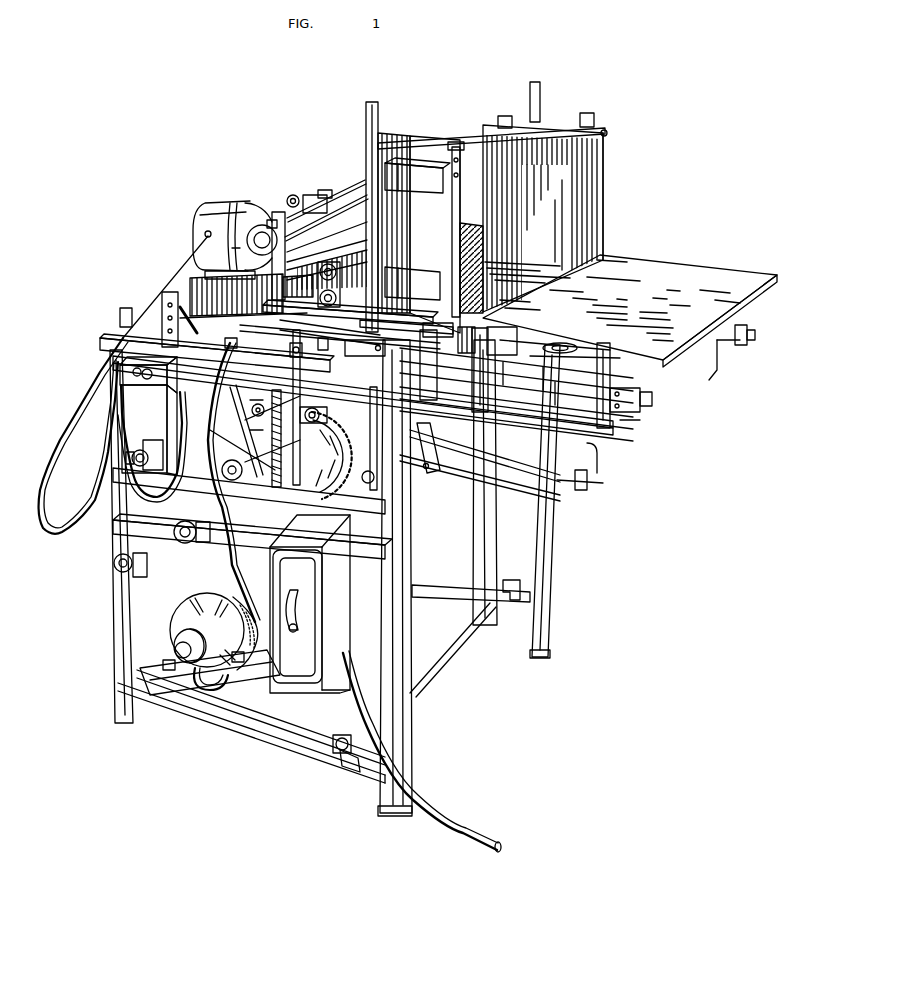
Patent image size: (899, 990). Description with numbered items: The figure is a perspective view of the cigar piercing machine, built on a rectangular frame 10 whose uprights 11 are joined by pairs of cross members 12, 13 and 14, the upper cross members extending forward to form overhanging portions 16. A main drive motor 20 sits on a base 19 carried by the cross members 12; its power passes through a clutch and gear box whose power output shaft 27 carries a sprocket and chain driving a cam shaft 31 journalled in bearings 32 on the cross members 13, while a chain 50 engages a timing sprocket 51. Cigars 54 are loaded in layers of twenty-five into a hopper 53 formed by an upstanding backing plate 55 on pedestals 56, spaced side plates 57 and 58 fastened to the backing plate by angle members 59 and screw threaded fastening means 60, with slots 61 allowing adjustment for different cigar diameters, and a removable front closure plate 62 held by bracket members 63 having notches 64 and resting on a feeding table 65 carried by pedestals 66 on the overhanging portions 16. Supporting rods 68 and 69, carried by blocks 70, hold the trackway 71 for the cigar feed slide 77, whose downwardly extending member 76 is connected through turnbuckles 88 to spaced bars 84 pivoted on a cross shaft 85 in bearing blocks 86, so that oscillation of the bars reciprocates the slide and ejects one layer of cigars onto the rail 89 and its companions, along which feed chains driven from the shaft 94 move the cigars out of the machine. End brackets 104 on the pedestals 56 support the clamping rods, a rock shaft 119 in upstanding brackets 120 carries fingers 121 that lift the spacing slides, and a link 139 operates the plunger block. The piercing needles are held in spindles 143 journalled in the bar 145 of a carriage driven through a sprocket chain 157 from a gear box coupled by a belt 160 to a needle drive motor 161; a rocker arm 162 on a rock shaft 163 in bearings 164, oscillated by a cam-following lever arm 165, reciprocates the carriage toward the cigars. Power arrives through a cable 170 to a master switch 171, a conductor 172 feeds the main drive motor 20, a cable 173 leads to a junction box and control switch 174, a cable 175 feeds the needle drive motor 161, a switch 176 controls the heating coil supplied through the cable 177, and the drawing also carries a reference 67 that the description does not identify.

The frame 10 is at (102, 335).
The uprights 11 is at (117, 713).
The cross members 12 is at (343, 763).
The cross members 13 is at (127, 527).
The cross members 14 is at (145, 475).
The overhanging portions 16 is at (610, 438).
The base 19 is at (182, 693).
The main drive motor 20 is at (172, 627).
The power output shaft 27 is at (177, 648).
The cam shaft 31 is at (180, 543).
The bearings 32 is at (200, 543).
The chain 50 is at (443, 467).
The timing sprocket 51 is at (332, 488).
The hopper 53 is at (607, 190).
The cigars 54 is at (480, 280).
The backing plate 55 is at (391, 145).
The pedestals 56 is at (460, 320).
The side plate 57 is at (444, 134).
The side plate 58 is at (553, 118).
The angle members 59 is at (430, 188).
The screw threaded fastening means 60 is at (396, 190).
The slots 61 is at (413, 168).
The front closure plate 62 is at (593, 230).
The bracket members 63 is at (483, 133).
The notches 64 is at (607, 133).
The feeding table 65 is at (687, 272).
The pedestals 66 is at (493, 323).
The slide strip 67 is at (460, 140).
The supporting rod 68 is at (652, 398).
The supporting rod 69 is at (755, 335).
The blocks 70 is at (717, 340).
The trackway 71 is at (620, 420).
The downwardly extending member 76 is at (488, 397).
The cigar feed slide 77 is at (523, 340).
The spaced bars 84 is at (483, 543).
The cross shaft 85 is at (453, 647).
The bearing blocks 86 is at (503, 588).
The turnbuckles 88 is at (577, 343).
The rail 89 is at (382, 355).
The shaft 94 is at (348, 348).
The end brackets 104 is at (360, 280).
The rock shaft 119 is at (317, 192).
The upstanding brackets 120 is at (278, 210).
The fingers 121 is at (353, 190).
The link 139 is at (233, 395).
The spindles 143 is at (223, 251).
The bar 145 is at (190, 288).
The sprocket chain 157 is at (292, 197).
The belt 160 is at (254, 238).
The drive motor 161 is at (228, 208).
The rocker arm 162 is at (167, 410).
The rock shaft 163 is at (130, 458).
The bearings 164 is at (158, 442).
The lever arm 165 is at (212, 427).
The cable 170 is at (458, 830).
The master switch 171 is at (357, 550).
The conductor 172 is at (213, 687).
The cable 173 is at (274, 556).
The junction box and control switch 174 is at (113, 392).
The cable 175 is at (52, 530).
The switch 176 is at (130, 372).
The cable 177 is at (120, 435).